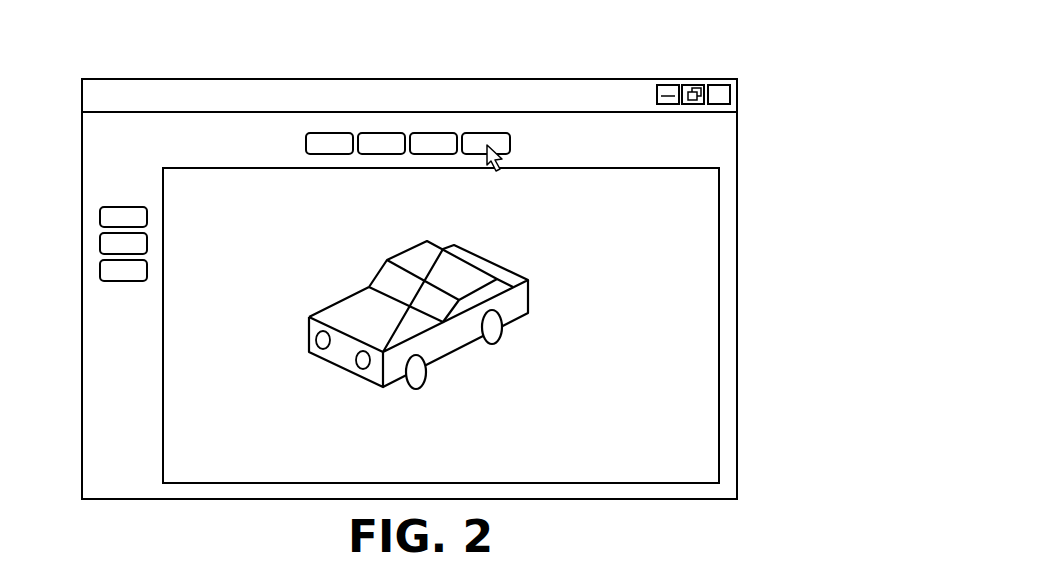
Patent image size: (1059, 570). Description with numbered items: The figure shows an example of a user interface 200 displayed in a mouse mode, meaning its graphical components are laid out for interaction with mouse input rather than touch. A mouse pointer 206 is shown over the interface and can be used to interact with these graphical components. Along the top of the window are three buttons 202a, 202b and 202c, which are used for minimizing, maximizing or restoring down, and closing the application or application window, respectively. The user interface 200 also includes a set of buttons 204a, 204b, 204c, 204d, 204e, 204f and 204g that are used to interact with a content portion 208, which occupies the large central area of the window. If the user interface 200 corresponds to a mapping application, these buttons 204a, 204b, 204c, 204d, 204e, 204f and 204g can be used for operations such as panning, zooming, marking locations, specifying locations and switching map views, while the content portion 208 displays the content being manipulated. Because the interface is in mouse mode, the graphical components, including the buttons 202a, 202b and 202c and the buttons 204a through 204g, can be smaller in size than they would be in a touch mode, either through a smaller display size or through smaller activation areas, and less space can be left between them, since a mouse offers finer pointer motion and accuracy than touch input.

The user interface 200 is at (86, 44).
The button 202a is at (666, 85).
The button 202b is at (692, 85).
The button 202c is at (723, 81).
The button 204a is at (332, 131).
The button 204b is at (380, 131).
The button 204c is at (433, 131).
The button 204d is at (490, 131).
The button 204e is at (100, 212).
The button 204f is at (100, 239).
The button 204g is at (100, 267).
The mouse pointer 206 is at (493, 172).
The content portion 208 is at (720, 247).